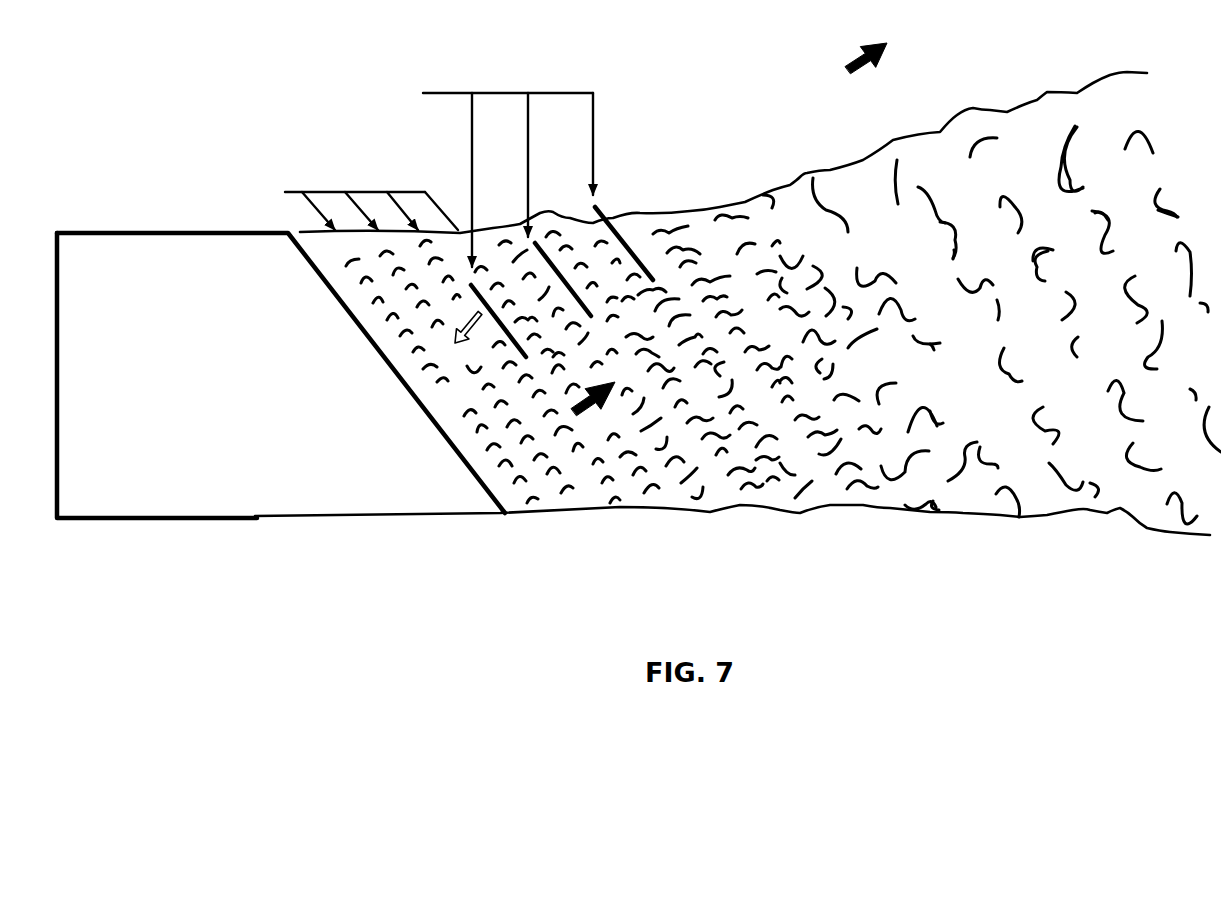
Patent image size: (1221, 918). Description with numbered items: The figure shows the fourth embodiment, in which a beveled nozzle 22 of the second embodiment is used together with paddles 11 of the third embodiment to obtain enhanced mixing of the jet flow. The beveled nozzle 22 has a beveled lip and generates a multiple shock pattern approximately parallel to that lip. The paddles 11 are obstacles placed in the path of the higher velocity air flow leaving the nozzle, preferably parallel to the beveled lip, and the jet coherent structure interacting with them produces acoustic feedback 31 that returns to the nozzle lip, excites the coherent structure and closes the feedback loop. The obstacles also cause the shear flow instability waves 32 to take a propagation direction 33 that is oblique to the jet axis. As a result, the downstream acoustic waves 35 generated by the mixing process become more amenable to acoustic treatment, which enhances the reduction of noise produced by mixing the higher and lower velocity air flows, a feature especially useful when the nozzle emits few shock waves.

The paddles 11 is at (513, 219).
The beveled nozzle 22 is at (93, 518).
The acoustic feedback 31 is at (462, 353).
The shear flow instability waves 32 is at (313, 193).
The propagation direction 33 is at (597, 420).
The downstream acoustic waves 35 is at (845, 73).